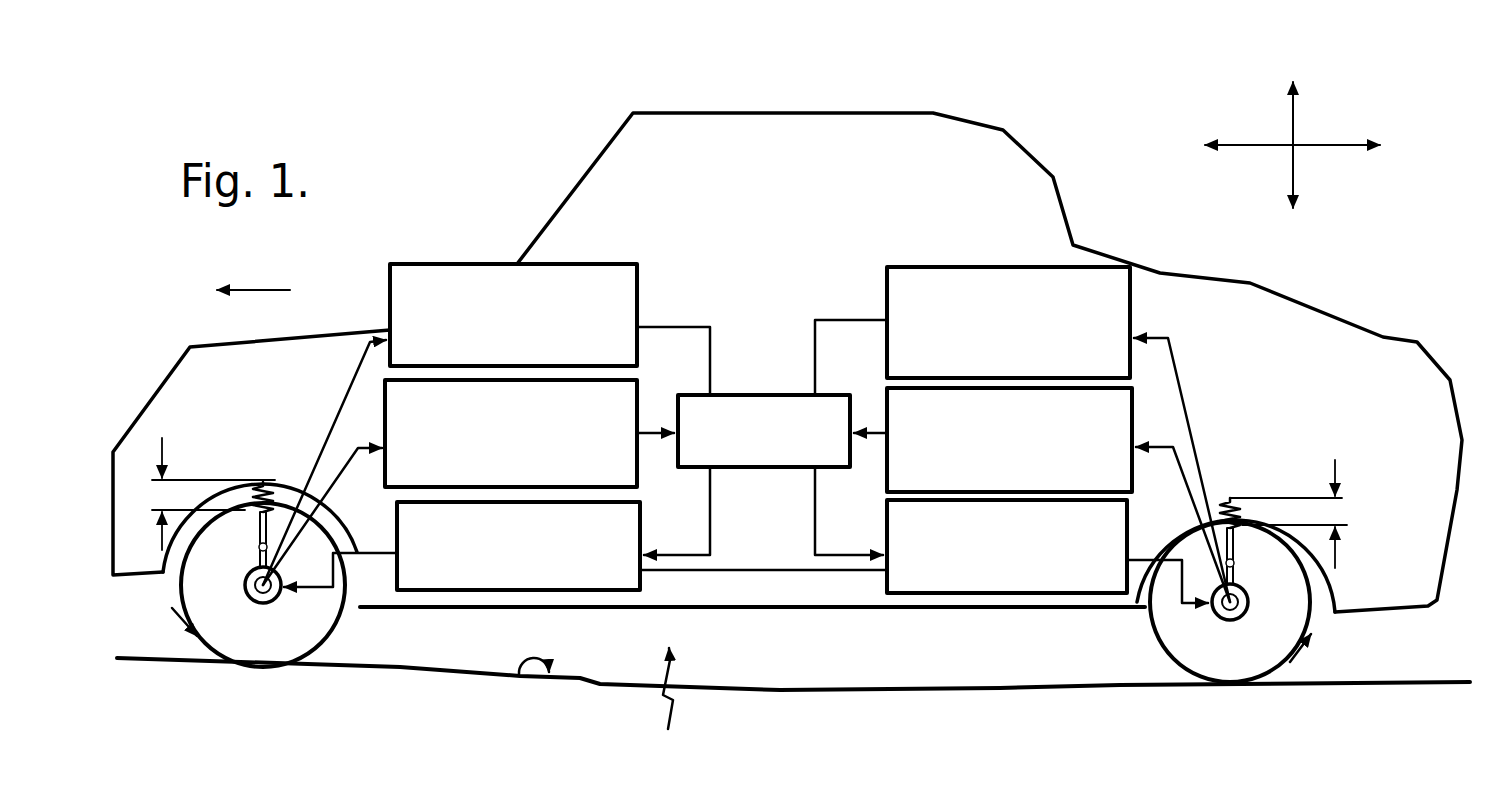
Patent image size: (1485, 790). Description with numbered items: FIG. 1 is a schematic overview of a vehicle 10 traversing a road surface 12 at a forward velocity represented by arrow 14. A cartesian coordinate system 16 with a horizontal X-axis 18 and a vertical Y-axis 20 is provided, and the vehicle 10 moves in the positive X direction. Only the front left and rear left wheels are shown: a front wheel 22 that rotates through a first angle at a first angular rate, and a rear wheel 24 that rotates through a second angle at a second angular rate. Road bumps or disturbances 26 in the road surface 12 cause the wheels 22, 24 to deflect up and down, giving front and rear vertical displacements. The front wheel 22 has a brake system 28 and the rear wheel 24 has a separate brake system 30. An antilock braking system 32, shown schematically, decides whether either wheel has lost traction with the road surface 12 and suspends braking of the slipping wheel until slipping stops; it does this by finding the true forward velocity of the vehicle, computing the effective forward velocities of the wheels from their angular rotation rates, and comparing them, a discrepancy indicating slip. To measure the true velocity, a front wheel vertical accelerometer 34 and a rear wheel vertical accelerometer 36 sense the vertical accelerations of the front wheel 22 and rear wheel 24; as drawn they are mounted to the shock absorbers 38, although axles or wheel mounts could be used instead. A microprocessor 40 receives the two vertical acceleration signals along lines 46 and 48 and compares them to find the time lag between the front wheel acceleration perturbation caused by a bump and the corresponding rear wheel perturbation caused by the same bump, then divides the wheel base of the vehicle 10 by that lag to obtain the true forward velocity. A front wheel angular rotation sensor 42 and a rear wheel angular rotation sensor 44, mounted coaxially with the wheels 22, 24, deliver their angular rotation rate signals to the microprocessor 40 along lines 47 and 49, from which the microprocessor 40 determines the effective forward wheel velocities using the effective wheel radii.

The vehicle 10 is at (1024, 121).
The road surface 12 is at (424, 669).
The arrow 14 is at (271, 291).
The cartesian coordinate system 16 is at (1303, 127).
The X-axis 18 is at (1315, 147).
The Y-axis 20 is at (1295, 108).
The front wheel 22 is at (268, 643).
The rear wheel 24 is at (1218, 655).
The road bumps or disturbances 26 is at (518, 674).
The brake system 28 is at (403, 513).
The separate brake system 30 is at (887, 526).
The antilock braking system 32 is at (670, 701).
The front wheel vertical accelerometer 34 is at (453, 265).
The rear wheel vertical accelerometer 36 is at (952, 266).
The shock absorbers 38 is at (282, 484).
The microprocessor 40 is at (748, 395).
The front wheel angular rotation sensor 42 is at (392, 400).
The rear wheel angular rotation sensor 44 is at (886, 482).
The line 46 is at (711, 331).
The line 47 is at (656, 438).
The line 48 is at (814, 338).
The line 49 is at (878, 435).